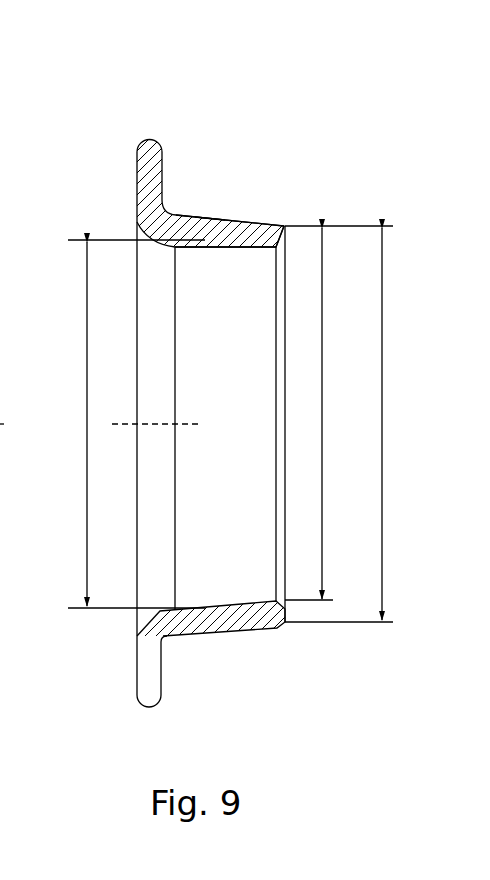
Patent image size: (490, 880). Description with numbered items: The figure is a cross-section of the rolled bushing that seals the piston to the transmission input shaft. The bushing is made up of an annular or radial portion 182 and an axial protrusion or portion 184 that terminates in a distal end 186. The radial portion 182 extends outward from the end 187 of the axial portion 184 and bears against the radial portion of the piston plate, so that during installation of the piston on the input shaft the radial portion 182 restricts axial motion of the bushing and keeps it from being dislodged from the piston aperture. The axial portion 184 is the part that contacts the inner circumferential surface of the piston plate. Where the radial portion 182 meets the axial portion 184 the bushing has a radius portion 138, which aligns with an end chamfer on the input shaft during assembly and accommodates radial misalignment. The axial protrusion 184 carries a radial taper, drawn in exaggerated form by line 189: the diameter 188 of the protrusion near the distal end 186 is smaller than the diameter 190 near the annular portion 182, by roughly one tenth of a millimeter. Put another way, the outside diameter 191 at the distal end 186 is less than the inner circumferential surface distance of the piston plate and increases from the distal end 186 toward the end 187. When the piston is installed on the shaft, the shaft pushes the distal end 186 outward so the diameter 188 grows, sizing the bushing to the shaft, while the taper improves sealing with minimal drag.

The annular portion 182 is at (173, 158).
The radius portion 138 is at (178, 197).
The end of axial portion 187 is at (210, 205).
The axial protrusion 184 is at (238, 216).
The distal end 186 is at (288, 232).
The line 189 is at (230, 246).
The diameter 188 is at (322, 366).
The outside diameter 191 is at (383, 394).
The diameter 190 is at (87, 410).